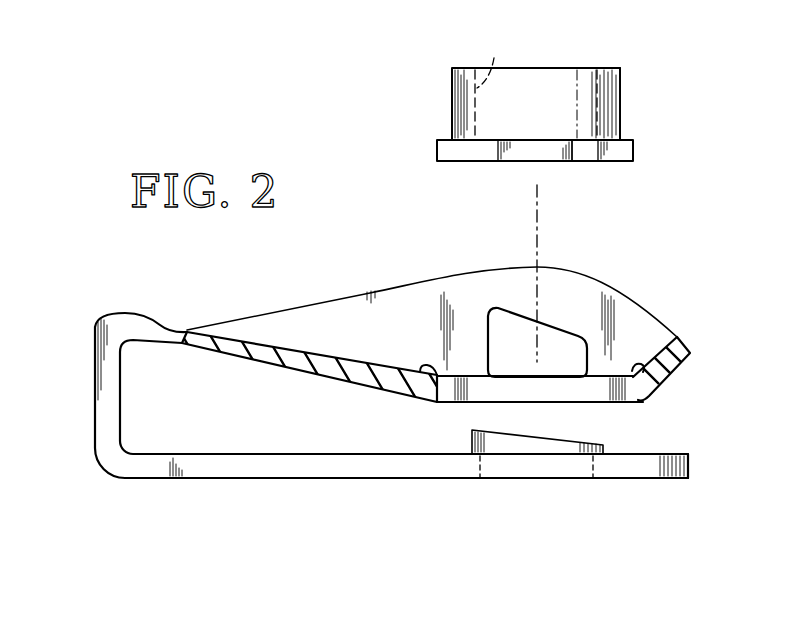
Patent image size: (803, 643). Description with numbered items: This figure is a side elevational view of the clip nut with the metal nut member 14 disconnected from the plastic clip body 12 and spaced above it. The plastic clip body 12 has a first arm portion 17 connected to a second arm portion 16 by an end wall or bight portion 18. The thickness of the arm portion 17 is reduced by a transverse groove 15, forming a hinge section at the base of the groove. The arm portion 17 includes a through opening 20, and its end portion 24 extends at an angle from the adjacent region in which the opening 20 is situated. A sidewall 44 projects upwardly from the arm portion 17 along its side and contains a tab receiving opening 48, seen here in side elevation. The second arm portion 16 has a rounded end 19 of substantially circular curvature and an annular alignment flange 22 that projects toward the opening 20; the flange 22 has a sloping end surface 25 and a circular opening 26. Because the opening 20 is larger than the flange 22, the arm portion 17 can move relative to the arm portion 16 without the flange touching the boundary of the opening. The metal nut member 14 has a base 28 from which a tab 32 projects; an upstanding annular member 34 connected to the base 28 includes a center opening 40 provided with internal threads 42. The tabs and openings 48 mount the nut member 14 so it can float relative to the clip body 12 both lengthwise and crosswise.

The plastic clip body 12 is at (210, 470).
The metal nut member 14 is at (420, 100).
The transverse groove 15 is at (168, 328).
The second arm portion 16 is at (368, 480).
The first arm portion 17 is at (283, 347).
The bight portion 18 is at (95, 382).
The rounded end 19 is at (690, 468).
The through opening 20 is at (603, 392).
The annular alignment flange 22 is at (473, 432).
The end portion 24 is at (680, 360).
The sloping end surface 25 is at (476, 432).
The circular opening 26 is at (632, 453).
The base 28 is at (437, 148).
The tab 32 is at (553, 152).
The upstanding annular member 34 is at (617, 98).
The center opening 40 is at (555, 80).
The internal threads 42 is at (494, 58).
The sidewall 44 is at (450, 290).
The tab receiving opening 48 is at (560, 343).